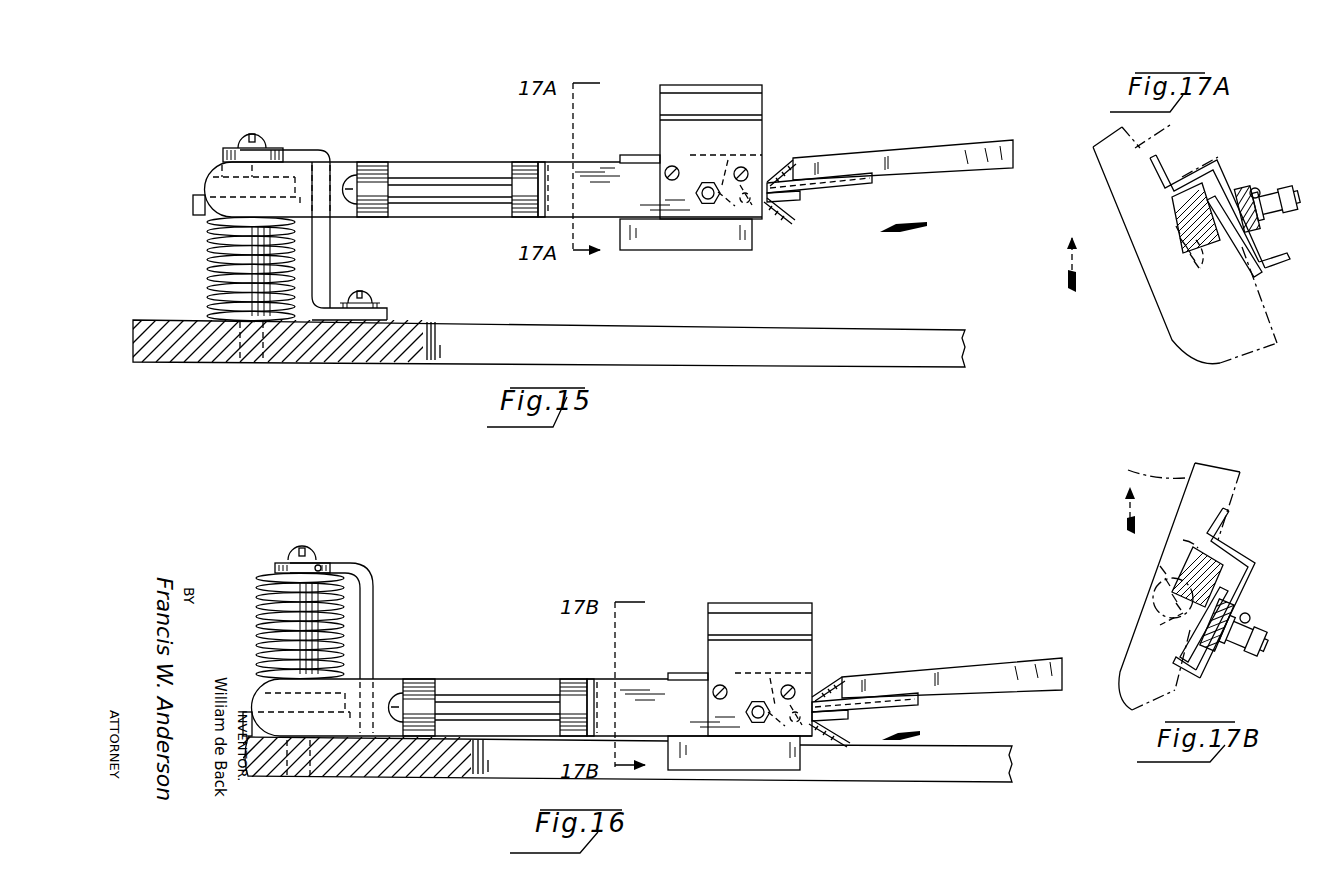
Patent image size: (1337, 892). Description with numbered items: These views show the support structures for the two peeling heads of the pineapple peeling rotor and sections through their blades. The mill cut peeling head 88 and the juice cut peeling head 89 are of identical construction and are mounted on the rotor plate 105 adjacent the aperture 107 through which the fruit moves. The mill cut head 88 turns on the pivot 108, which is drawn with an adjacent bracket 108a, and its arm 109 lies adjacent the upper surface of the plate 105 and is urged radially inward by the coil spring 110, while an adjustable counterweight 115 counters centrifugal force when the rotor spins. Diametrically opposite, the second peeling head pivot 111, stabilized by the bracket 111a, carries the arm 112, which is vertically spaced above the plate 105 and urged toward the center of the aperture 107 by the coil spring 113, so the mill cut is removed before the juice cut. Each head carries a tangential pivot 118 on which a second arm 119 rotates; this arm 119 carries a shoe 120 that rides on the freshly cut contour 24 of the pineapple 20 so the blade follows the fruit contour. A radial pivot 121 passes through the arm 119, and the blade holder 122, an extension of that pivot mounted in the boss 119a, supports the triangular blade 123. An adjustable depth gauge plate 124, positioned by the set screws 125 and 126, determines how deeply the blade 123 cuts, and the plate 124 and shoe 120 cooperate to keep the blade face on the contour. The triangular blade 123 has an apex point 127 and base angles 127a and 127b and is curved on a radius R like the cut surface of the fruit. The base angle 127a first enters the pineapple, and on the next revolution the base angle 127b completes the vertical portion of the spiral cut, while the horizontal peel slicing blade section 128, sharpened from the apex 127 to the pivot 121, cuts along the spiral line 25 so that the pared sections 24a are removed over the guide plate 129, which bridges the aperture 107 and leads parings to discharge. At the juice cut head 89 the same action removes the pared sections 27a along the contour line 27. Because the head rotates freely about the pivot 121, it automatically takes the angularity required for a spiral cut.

In FIG. 17A, the pineapple 20 is at (1090, 160).
In FIG. 17B, the pineapple 20 is at (1185, 478).
In FIG. 17B, the contour line 24 is at (1275, 462).
In FIG. 17B, the pared sections 24a is at (1216, 553).
In FIG. 17A, the dotted line 25 is at (1222, 160).
In FIG. 17B, the dotted line 25 is at (1180, 541).
In FIG. 17A, the contour line 27 is at (1166, 130).
In FIG. 17A, the pared sections 27a is at (1177, 208).
In FIG. 16, the mill cut peeling head 88 is at (945, 655).
In FIG. 17B, the mill cut peeling head 88 is at (1247, 680).
In FIG. 15, the juice cut peeling head 89 is at (938, 112).
In FIG. 17A, the juice cut peeling head 89 is at (1255, 132).
In FIG. 15, the plate 105 is at (372, 352).
In FIG. 16, the plate 105 is at (363, 770).
In FIG. 15, the aperture 107 is at (430, 334).
In FIG. 16, the aperture 107 is at (482, 760).
In FIG. 16, the pivot 108 is at (272, 565).
In FIG. 16, the bracket 108a is at (374, 568).
In FIG. 16, the arm 109 is at (400, 680).
In FIG. 16, the spring 110 is at (258, 612).
In FIG. 15, the second peeling head pivot 111 is at (232, 152).
In FIG. 15, the bracket 111a is at (300, 150).
In FIG. 15, the arm 112 is at (390, 164).
In FIG. 15, the coil spring 113 is at (210, 262).
In FIG. 15, the adjustable counterweight 115 is at (193, 206).
In FIG. 16, the adjustable counterweight 115 is at (250, 741).
In FIG. 15, the tangential pivot 118 is at (470, 177).
In FIG. 16, the tangential pivot 118 is at (478, 696).
In FIG. 17A, the tangential pivot 118 is at (1243, 275).
In FIG. 17B, the tangential pivot 118 is at (1183, 650).
In FIG. 15, the second arm 119 is at (550, 167).
In FIG. 16, the second arm 119 is at (597, 684).
In FIG. 17A, the boss 119a is at (1270, 228).
In FIG. 17B, the boss 119a is at (1237, 630).
In FIG. 15, the shoe 120 is at (690, 88).
In FIG. 16, the shoe 120 is at (812, 612).
In FIG. 17A, the shoe 120 is at (1170, 149).
In FIG. 17B, the shoe 120 is at (1237, 515).
In FIG. 15, the radial pivot 121 is at (696, 193).
In FIG. 16, the radial pivot 121 is at (746, 712).
In FIG. 17A, the radial pivot 121 is at (1292, 203).
In FIG. 17B, the radial pivot 121 is at (1264, 650).
In FIG. 15, the blade holder 122 is at (870, 193).
In FIG. 16, the blade holder 122 is at (913, 708).
In FIG. 15, the triangular blade 123 is at (802, 198).
In FIG. 16, the triangular blade 123 is at (846, 717).
In FIG. 17A, the triangular blade 123 is at (1190, 250).
In FIG. 17B, the triangular blade 123 is at (1168, 582).
In FIG. 15, the adjustable plate 124 is at (680, 243).
In FIG. 16, the adjustable plate 124 is at (755, 753).
In FIG. 17A, the adjustable plate 124 is at (1280, 266).
In FIG. 17B, the adjustable plate 124 is at (1193, 680).
In FIG. 15, the set screw 125 is at (668, 169).
In FIG. 16, the set screw 125 is at (716, 688).
In FIG. 17A, the set screw 125 is at (1255, 188).
In FIG. 17B, the set screw 125 is at (1250, 614).
In FIG. 15, the set screw 126 is at (749, 172).
In FIG. 16, the set screw 126 is at (795, 689).
In FIG. 15, the apex point 127 is at (766, 208).
In FIG. 16, the apex point 127 is at (815, 737).
In FIG. 17A, the apex point 127 is at (1193, 257).
In FIG. 17B, the apex point 127 is at (1175, 598).
In FIG. 15, the base angle 127a is at (796, 222).
In FIG. 16, the base angle 127a is at (852, 742).
In FIG. 17A, the base angle 127a is at (1197, 264).
In FIG. 17B, the base angle 127a is at (1178, 606).
In FIG. 15, the base angle 127b is at (790, 166).
In FIG. 16, the base angle 127b is at (836, 684).
In FIG. 17A, the base angle 127b is at (1183, 238).
In FIG. 17B, the base angle 127b is at (1165, 572).
In FIG. 15, the peel slicing blade section 128 is at (728, 171).
In FIG. 16, the peel slicing blade section 128 is at (776, 691).
In FIG. 17A, the peel slicing blade section 128 is at (1202, 252).
In FIG. 17B, the peel slicing blade section 128 is at (1152, 628).
In FIG. 15, the guide plate 129 is at (988, 168).
In FIG. 16, the guide plate 129 is at (1024, 692).
In FIG. 17A, the radius R is at (1185, 243).
In FIG. 17B, the radius R is at (1172, 590).